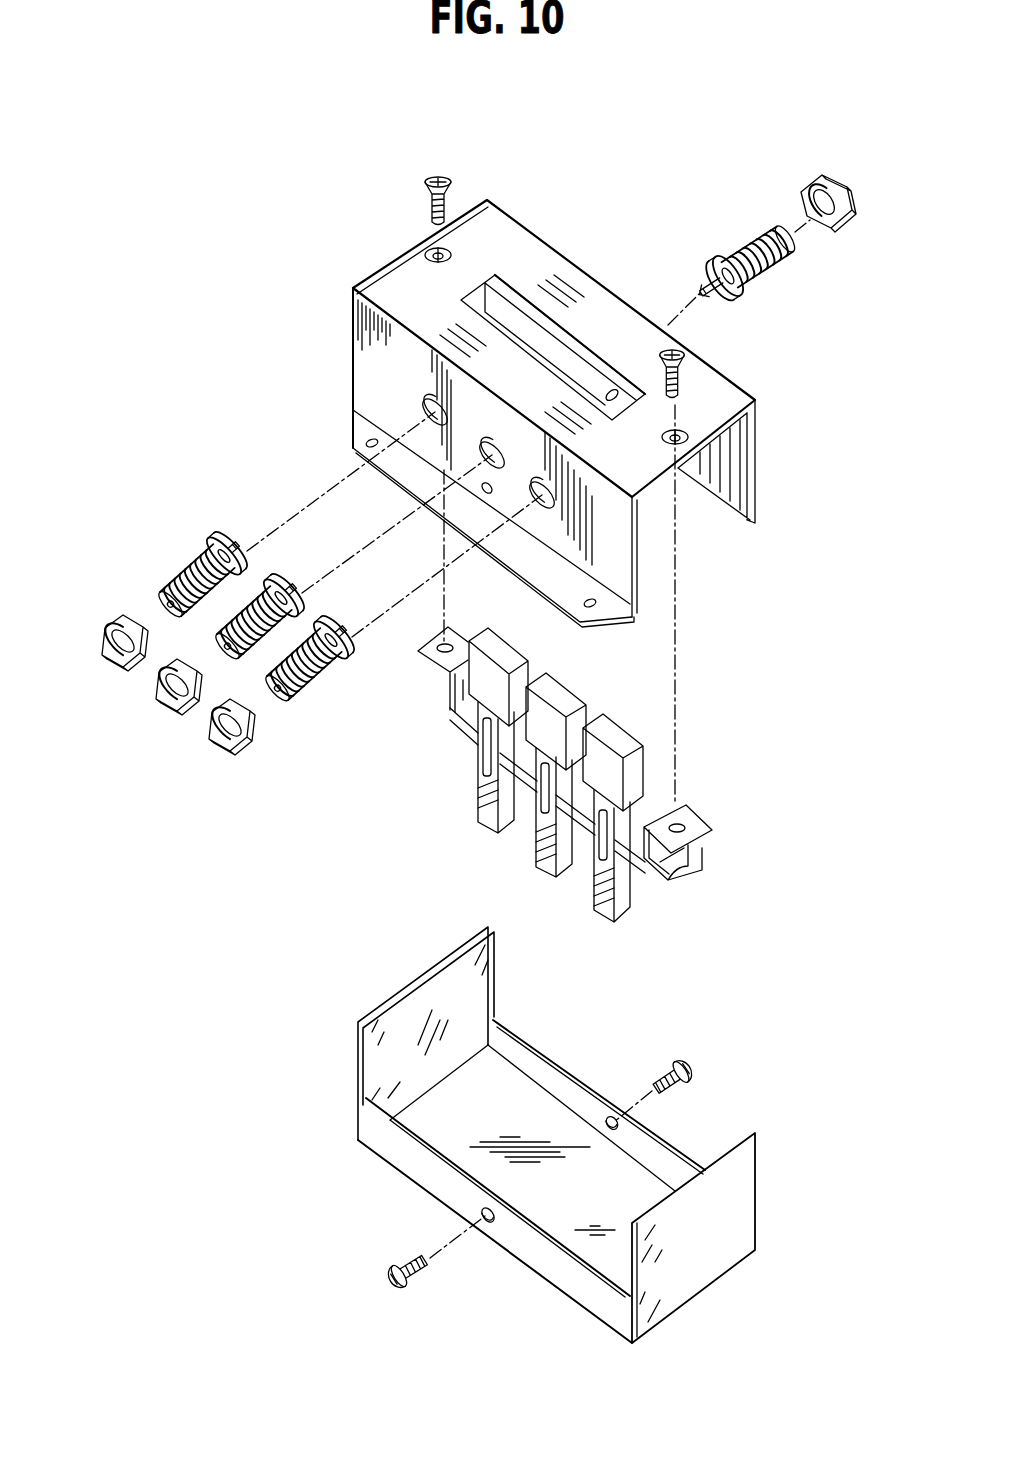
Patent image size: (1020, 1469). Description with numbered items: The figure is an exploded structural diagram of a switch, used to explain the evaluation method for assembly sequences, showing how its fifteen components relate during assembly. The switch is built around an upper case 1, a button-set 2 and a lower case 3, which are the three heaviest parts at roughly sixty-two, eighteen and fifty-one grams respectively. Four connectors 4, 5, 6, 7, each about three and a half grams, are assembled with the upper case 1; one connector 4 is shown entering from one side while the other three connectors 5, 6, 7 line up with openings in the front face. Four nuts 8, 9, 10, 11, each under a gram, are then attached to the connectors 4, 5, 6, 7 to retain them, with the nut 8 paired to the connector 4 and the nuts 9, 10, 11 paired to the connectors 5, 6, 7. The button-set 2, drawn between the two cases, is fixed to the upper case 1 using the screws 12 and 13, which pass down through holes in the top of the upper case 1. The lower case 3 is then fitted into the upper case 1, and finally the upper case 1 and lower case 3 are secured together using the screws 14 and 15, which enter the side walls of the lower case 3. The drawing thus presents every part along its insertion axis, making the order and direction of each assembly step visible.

The upper case 1 is at (350, 258).
The button-set 2 is at (708, 784).
The lower case 3 is at (341, 1052).
The connector 4 is at (738, 250).
The connector 5 is at (204, 553).
The connector 6 is at (278, 594).
The connector 7 is at (336, 680).
The nut 8 is at (820, 228).
The nut 9 is at (118, 668).
The nut 10 is at (176, 712).
The nut 11 is at (235, 752).
The screw 12 is at (442, 180).
The screw 13 is at (662, 352).
The screw 14 is at (394, 1269).
The screw 15 is at (688, 1066).